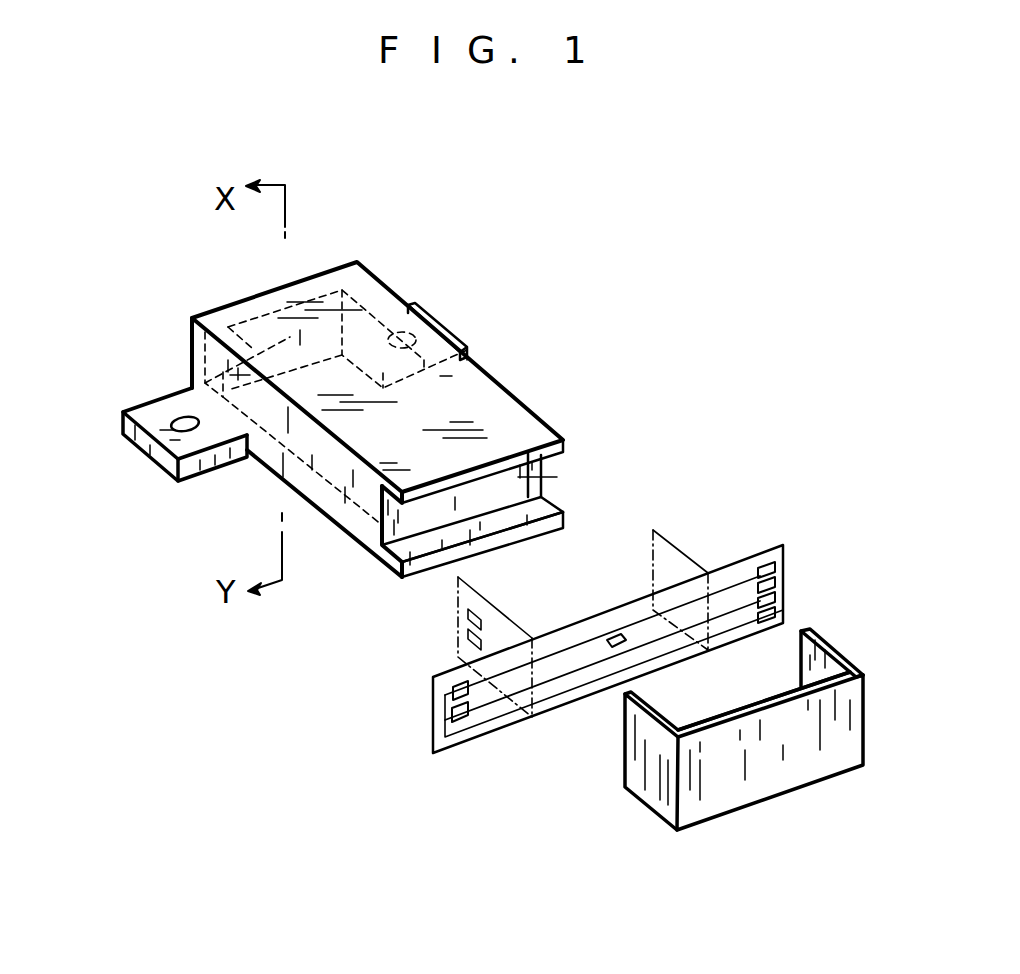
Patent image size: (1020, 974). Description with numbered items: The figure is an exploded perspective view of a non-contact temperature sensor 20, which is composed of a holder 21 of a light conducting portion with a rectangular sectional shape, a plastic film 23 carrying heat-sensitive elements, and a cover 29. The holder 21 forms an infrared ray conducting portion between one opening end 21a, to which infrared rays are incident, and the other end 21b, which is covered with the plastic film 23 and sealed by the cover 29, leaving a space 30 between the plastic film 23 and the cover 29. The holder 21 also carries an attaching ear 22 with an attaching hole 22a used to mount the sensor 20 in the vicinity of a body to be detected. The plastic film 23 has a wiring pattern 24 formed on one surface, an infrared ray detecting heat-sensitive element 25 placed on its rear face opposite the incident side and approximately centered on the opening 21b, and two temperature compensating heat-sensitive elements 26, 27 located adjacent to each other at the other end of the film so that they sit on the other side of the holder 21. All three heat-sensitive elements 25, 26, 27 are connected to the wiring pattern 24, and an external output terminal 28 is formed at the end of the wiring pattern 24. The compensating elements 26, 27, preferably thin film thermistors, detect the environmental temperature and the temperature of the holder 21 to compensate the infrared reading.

The non-contact temperature sensor 20 is at (656, 381).
The holder 21 is at (482, 392).
The opening end 21a is at (212, 318).
The other end opening 21b is at (503, 484).
The attaching ear 22 is at (128, 436).
The attaching hole 22a is at (185, 433).
The plastic film 23 is at (488, 738).
The wiring pattern 24 is at (567, 673).
The infrared ray detecting heat-sensitive element 25 is at (612, 634).
The temperature compensating heat-sensitive element 26 is at (455, 720).
The temperature compensating heat-sensitive element 27 is at (452, 690).
The external output terminal 28 is at (776, 614).
The cover 29 is at (765, 775).
The space 30 is at (765, 673).